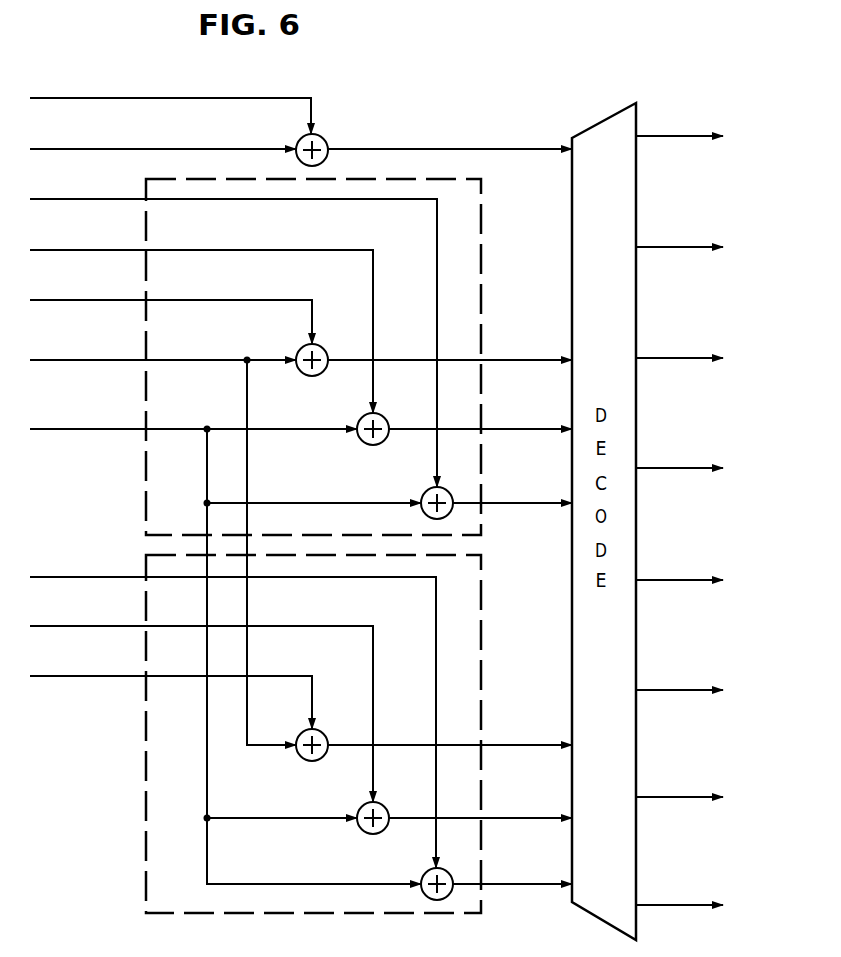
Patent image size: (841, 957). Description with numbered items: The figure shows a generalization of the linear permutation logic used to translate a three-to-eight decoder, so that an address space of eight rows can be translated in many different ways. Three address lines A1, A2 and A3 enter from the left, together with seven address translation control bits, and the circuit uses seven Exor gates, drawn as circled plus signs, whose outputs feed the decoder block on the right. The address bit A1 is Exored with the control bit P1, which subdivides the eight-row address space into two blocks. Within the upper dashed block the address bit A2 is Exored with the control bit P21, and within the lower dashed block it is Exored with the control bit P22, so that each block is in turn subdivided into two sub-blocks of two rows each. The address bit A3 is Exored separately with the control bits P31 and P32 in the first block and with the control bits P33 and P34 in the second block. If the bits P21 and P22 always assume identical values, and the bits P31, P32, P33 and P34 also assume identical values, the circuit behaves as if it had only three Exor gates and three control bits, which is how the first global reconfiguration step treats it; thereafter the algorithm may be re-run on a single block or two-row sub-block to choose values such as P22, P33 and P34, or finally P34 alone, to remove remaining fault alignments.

The address translation control bit P1 is at (170, 102).
The address bit A1 is at (163, 136).
The address translation control bit P31 is at (233, 329).
The address translation control bit P32 is at (201, 318).
The address translation control bit P21 is at (171, 308).
The address bit A2 is at (163, 539).
The address bit A3 is at (225, 643).
The address translation control bit P33 is at (233, 709).
The address translation control bit P34 is at (201, 700).
The address translation control bit P22 is at (171, 689).